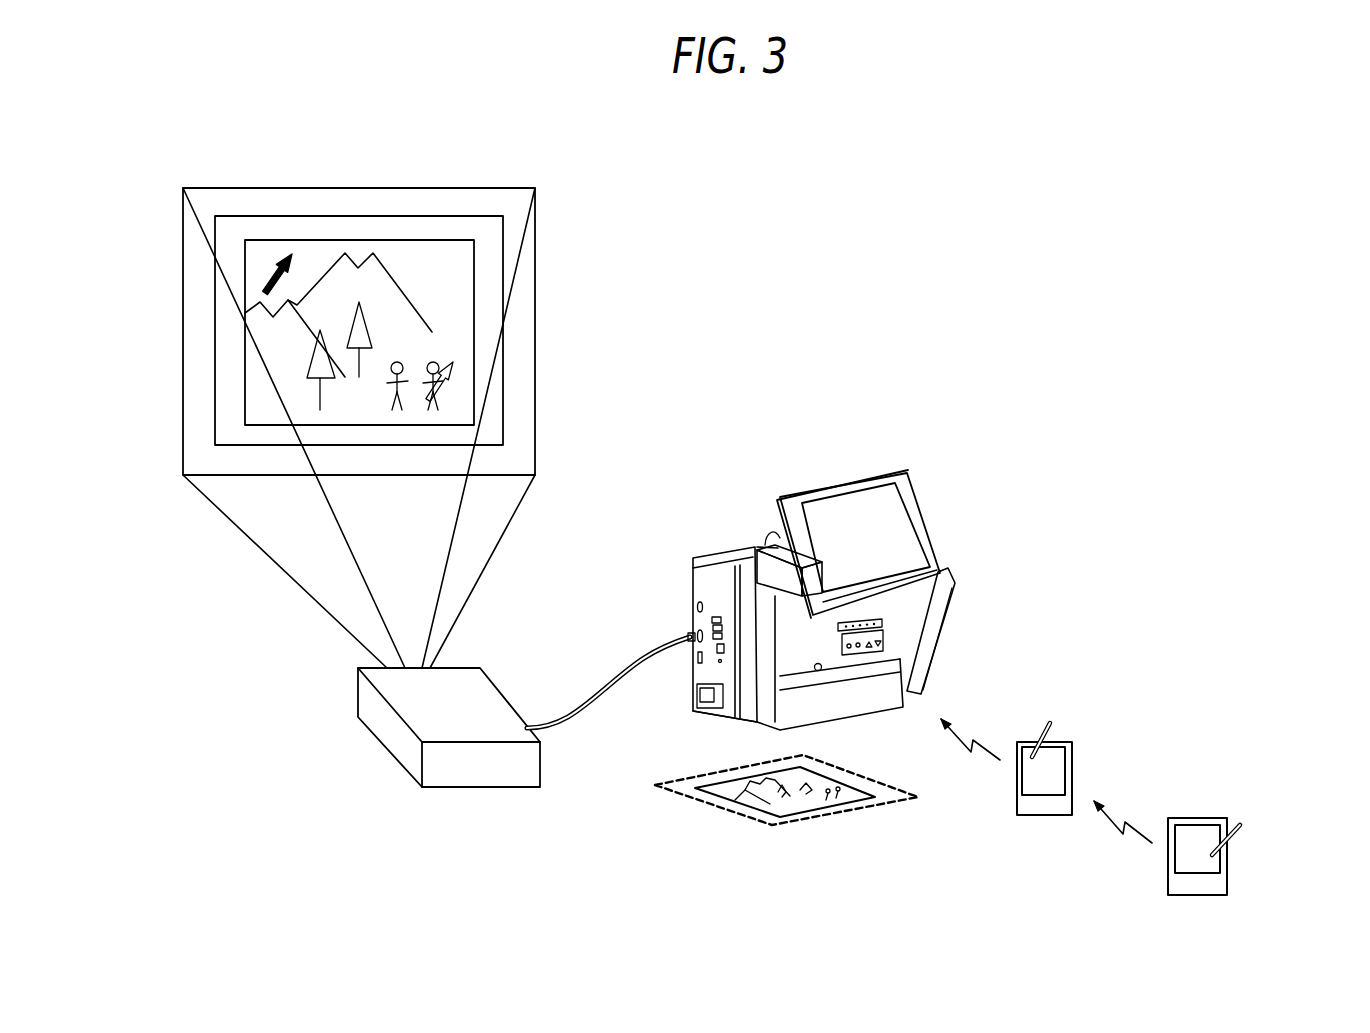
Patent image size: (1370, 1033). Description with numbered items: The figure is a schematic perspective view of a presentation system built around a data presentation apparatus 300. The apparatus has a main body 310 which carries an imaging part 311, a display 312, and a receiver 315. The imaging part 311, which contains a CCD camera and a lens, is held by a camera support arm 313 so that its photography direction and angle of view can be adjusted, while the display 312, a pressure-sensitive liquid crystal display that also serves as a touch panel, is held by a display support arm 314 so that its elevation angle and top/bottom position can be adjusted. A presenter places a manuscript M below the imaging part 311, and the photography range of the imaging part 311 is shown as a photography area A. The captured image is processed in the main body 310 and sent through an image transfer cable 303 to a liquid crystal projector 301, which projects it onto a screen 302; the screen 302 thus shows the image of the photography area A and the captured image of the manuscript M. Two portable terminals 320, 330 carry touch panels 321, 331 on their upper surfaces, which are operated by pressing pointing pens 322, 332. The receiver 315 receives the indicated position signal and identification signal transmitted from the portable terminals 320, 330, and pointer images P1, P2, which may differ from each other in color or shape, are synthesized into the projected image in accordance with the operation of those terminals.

The data presentation apparatus 300 is at (922, 440).
The liquid crystal projector 301 is at (492, 772).
The screen 302 is at (423, 188).
The image transfer cable 303 is at (608, 682).
The main body 310 is at (737, 548).
The imaging part 311 is at (777, 547).
The display 312 is at (917, 503).
The camera support arm 313 is at (748, 670).
The display support arm 314 is at (953, 603).
The receiver 315 is at (885, 620).
The portable terminal 320 is at (1080, 712).
The touch panel 321 is at (1055, 772).
The pointing pen 322 is at (1040, 740).
The portable terminal 330 is at (1220, 775).
The touch panel 331 is at (1213, 863).
The pointing pen 332 is at (1240, 827).
The pointer image P1 is at (268, 273).
The pointer image P2 is at (447, 363).
The photography area A is at (713, 805).
The manuscript M is at (785, 810).